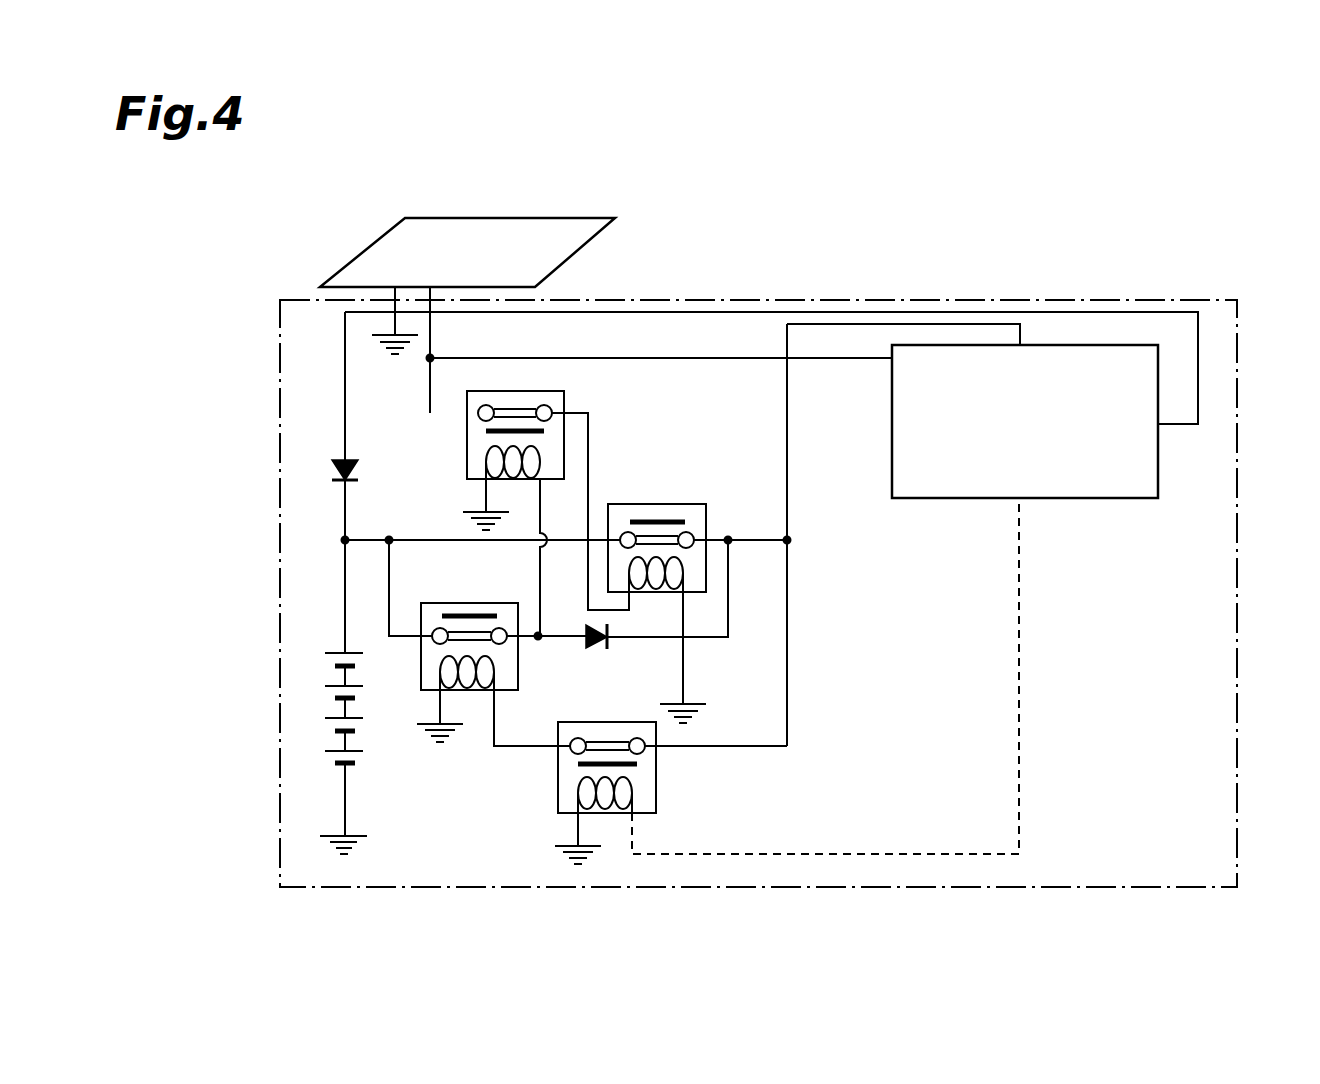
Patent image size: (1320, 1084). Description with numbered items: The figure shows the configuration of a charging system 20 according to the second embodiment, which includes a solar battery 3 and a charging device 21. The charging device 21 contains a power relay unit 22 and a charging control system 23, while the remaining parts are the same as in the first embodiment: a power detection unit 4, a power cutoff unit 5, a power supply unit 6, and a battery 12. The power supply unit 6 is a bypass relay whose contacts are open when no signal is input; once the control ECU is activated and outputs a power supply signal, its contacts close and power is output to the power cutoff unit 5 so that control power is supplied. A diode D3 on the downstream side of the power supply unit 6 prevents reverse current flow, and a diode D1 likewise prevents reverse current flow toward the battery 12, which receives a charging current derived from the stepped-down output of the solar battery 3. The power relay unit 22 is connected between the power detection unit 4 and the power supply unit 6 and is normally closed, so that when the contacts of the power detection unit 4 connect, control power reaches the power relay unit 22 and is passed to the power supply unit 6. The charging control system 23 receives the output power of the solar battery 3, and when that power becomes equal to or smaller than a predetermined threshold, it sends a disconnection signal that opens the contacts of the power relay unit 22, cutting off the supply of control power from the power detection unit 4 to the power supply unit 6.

The solar battery 3 is at (488, 218).
The power detection unit 4 is at (679, 503).
The power cutoff unit 5 is at (565, 400).
The power supply unit 6 is at (473, 603).
The battery 12 is at (343, 650).
The charging system 20 is at (1165, 220).
The charging device 21 is at (1237, 400).
The power relay unit 22 is at (657, 797).
The charging control system 23 is at (1107, 500).
The diode D1 is at (353, 470).
The diode D3 is at (595, 650).